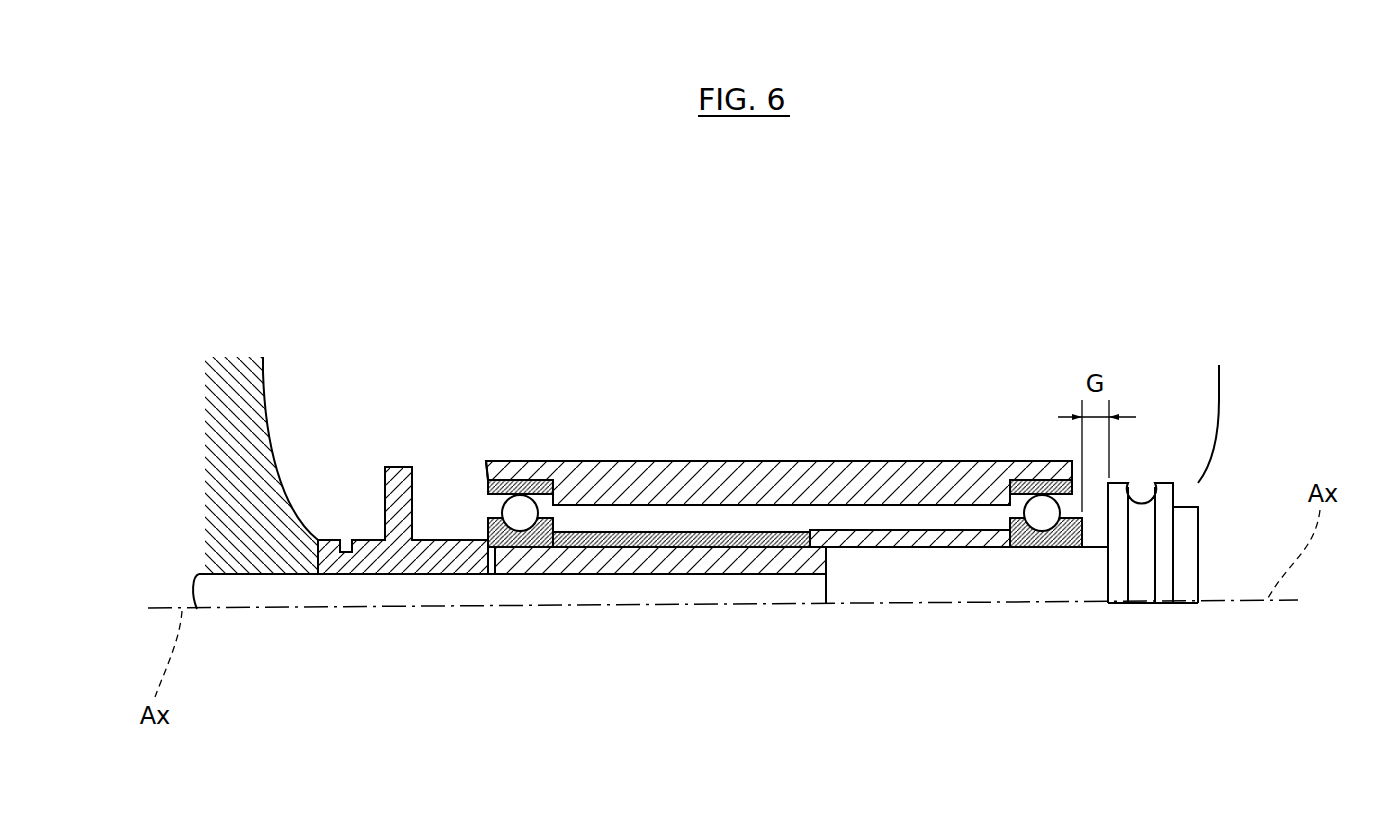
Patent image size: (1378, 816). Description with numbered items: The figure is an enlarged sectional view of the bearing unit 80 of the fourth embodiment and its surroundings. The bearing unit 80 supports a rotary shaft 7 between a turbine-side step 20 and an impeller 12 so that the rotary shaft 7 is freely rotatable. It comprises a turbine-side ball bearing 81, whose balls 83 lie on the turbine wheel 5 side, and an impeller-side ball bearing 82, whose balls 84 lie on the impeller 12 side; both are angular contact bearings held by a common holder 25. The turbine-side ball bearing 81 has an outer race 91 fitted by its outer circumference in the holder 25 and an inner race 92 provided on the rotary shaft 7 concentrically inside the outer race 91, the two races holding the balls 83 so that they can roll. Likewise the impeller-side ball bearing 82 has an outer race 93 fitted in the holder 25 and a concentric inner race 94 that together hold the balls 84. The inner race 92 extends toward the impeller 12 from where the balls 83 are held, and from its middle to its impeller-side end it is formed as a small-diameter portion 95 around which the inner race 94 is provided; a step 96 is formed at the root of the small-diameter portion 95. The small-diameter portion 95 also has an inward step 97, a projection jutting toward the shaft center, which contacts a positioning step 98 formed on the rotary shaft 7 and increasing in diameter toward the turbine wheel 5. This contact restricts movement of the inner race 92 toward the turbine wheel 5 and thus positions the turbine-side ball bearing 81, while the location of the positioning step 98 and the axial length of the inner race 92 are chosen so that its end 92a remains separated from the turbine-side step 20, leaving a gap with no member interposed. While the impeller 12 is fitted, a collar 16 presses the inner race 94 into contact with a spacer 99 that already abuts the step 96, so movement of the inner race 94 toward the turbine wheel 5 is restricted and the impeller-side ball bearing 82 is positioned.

The turbine wheel 5 is at (1212, 435).
The rotary shaft 7 is at (736, 587).
The impeller 12 is at (263, 373).
The collar 16 is at (368, 540).
The turbine-side step 20 is at (1108, 535).
The holder 25 is at (795, 461).
The bearing unit 80 is at (787, 349).
The turbine-side ball bearing 81 is at (1047, 490).
The impeller-side ball bearing 82 is at (524, 482).
The balls 83 is at (1040, 484).
The balls 84 is at (548, 484).
The outer race 91 is at (1012, 470).
The inner race 92 is at (962, 546).
The end 92a is at (1082, 537).
The outer race 93 is at (497, 468).
The inner race 94 is at (490, 527).
The small-diameter portion 95 is at (633, 574).
The step 96 is at (807, 531).
The inward step 97 is at (827, 561).
The positioning step 98 is at (826, 586).
The spacer 99 is at (637, 540).